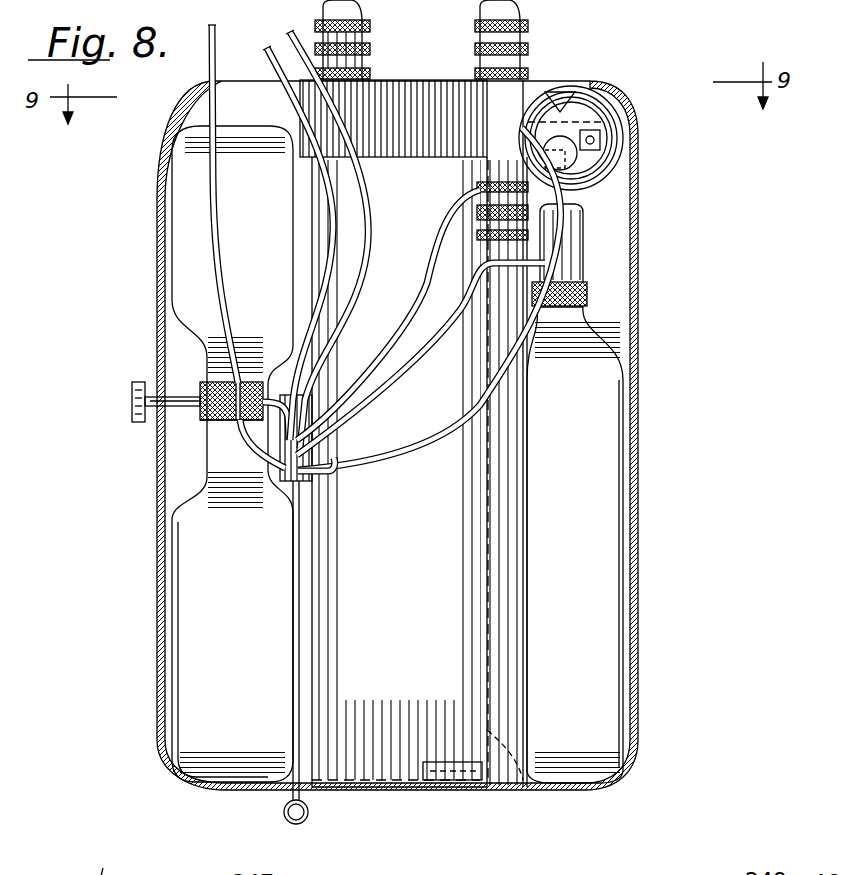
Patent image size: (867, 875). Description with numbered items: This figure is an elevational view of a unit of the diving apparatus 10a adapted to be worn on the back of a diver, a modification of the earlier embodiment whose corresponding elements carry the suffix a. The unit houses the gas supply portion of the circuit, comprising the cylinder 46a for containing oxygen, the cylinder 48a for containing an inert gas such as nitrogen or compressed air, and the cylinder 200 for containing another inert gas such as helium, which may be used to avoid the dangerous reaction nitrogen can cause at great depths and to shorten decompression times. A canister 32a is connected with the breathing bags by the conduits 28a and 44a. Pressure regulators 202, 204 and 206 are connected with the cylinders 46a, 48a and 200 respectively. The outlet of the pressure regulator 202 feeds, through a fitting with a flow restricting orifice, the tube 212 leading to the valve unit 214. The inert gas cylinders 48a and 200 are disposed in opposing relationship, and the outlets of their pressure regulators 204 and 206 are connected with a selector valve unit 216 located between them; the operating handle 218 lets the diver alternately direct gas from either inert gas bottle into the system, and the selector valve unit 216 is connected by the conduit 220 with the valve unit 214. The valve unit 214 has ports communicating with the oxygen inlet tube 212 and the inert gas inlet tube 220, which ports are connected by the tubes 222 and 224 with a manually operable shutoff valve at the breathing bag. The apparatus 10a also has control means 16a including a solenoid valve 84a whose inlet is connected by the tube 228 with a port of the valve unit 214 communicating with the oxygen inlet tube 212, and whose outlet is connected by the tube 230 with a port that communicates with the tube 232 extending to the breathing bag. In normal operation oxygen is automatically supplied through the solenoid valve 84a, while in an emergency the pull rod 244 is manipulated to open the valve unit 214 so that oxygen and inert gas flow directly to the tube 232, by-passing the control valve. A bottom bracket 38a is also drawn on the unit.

The apparatus 10a is at (648, 255).
The control means 16a is at (618, 114).
The conduit 28a is at (362, 10).
The canister 32a is at (357, 767).
The bottom bracket 38a is at (473, 780).
The conduit 44a is at (521, 10).
The cylinder 46a is at (610, 517).
The cylinder 48a is at (160, 570).
The solenoid valve 84a is at (613, 155).
The cylinder 200 is at (175, 232).
The pressure regulator 202 is at (587, 296).
The pressure regulator 204 is at (200, 420).
The pressure regulator 206 is at (203, 382).
The tube 212 is at (433, 367).
The valve unit 214 is at (332, 472).
The selector valve unit 216 is at (200, 412).
The operating handle 218 is at (132, 408).
The conduit 220 is at (287, 398).
The tube 222 is at (373, 197).
The tube 224 is at (338, 218).
The tube 228 is at (428, 278).
The tube 230 is at (420, 445).
The tube 232 is at (208, 190).
The pull rod 244 is at (292, 715).